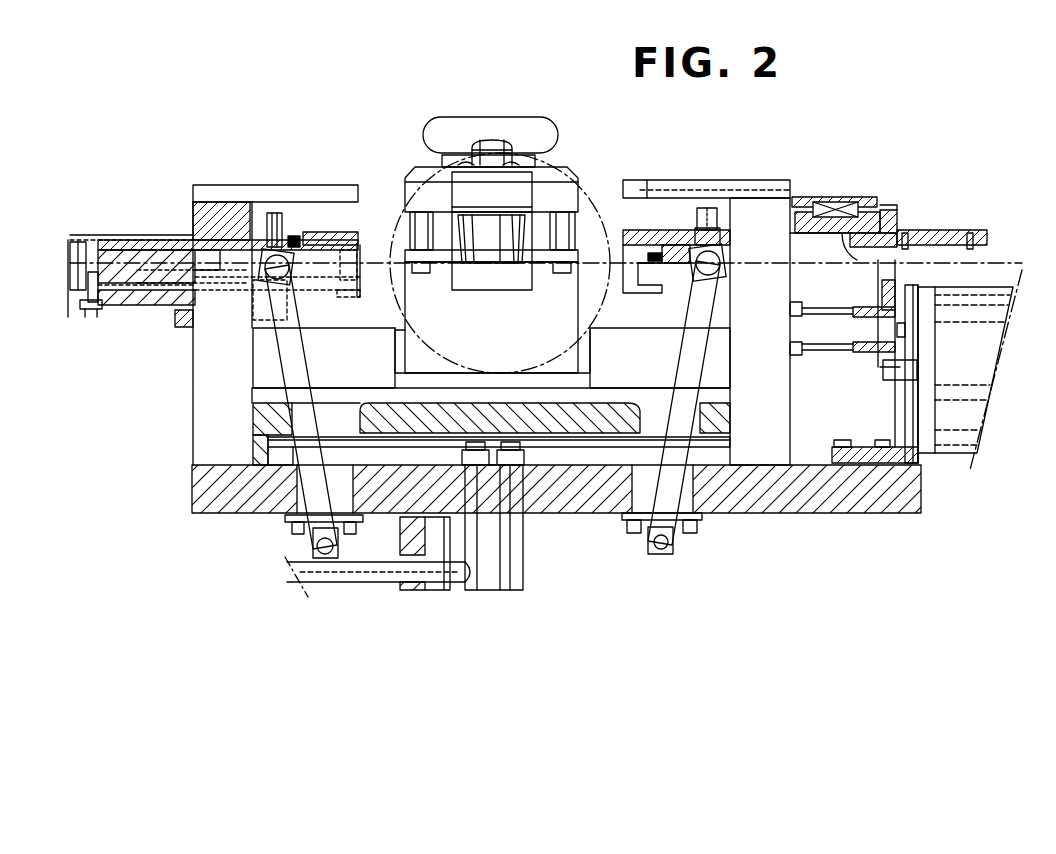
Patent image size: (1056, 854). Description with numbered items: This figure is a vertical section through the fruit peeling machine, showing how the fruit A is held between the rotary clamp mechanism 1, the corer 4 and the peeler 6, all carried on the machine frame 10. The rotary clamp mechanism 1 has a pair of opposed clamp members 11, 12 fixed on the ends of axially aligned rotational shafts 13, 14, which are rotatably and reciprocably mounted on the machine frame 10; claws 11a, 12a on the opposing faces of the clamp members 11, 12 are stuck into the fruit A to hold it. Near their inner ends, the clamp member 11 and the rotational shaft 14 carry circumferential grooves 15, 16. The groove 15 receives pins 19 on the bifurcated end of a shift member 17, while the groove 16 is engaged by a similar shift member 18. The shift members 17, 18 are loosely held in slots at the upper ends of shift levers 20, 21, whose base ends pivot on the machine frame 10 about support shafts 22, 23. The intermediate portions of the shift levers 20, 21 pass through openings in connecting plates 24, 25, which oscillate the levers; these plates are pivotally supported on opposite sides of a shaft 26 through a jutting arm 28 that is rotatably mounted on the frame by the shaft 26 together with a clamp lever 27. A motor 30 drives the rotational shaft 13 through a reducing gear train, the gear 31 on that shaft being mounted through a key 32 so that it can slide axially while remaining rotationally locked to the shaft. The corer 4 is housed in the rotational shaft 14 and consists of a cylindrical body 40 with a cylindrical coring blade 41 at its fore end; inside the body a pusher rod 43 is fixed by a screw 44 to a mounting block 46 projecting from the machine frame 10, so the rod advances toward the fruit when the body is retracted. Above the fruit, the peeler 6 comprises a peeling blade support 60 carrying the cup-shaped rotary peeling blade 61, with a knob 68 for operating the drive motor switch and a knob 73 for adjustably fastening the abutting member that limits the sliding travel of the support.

The rotary clamp mechanism 1 is at (832, 173).
The corer 4 is at (77, 225).
The peeler 6 is at (575, 140).
The machine frame 10 is at (198, 396).
The clamp member 11 is at (642, 232).
The claws 11a is at (628, 290).
The clamp member 12 is at (331, 232).
The claws 12a is at (358, 297).
The rotational shaft 13 is at (820, 243).
The rotational shaft 14 is at (177, 240).
The groove 15 is at (697, 232).
The groove 16 is at (294, 236).
The shift member 17 is at (720, 268).
The shift member 18 is at (264, 272).
The pins 19 is at (272, 213).
The shift lever 20 is at (690, 318).
The shift lever 21 is at (298, 318).
The support shaft 22 is at (662, 556).
The support shaft 23 is at (313, 547).
The connecting plate 24 is at (583, 468).
The connecting plate 25 is at (405, 440).
The shaft 26 is at (522, 568).
The clamp lever 27 is at (372, 582).
The jutting arm 28 is at (548, 447).
The motor 30 is at (952, 453).
The gear 31 is at (890, 210).
The key 32 is at (950, 223).
The cylindrical body 40 is at (78, 242).
The cylindrical coring blade 41 is at (358, 246).
The pusher rod 43 is at (133, 264).
The screw 44 is at (91, 310).
The mounting block 46 is at (132, 305).
The peeling blade support 60 is at (418, 176).
The cup-shaped rotary peeling blade 61 is at (482, 275).
The knob 68 is at (520, 118).
The knob 73 is at (486, 142).
The fruit A is at (598, 222).